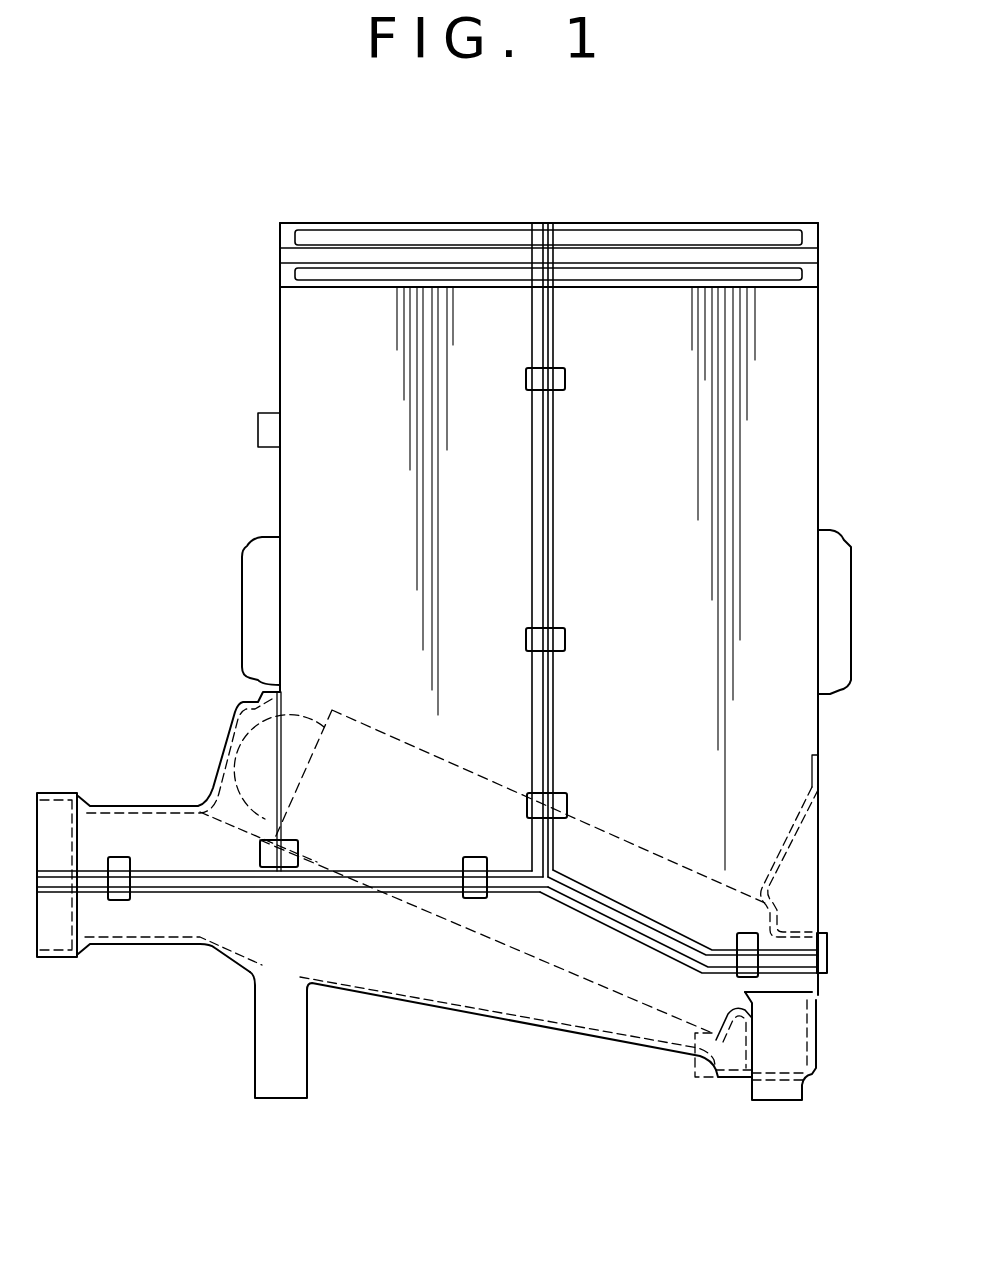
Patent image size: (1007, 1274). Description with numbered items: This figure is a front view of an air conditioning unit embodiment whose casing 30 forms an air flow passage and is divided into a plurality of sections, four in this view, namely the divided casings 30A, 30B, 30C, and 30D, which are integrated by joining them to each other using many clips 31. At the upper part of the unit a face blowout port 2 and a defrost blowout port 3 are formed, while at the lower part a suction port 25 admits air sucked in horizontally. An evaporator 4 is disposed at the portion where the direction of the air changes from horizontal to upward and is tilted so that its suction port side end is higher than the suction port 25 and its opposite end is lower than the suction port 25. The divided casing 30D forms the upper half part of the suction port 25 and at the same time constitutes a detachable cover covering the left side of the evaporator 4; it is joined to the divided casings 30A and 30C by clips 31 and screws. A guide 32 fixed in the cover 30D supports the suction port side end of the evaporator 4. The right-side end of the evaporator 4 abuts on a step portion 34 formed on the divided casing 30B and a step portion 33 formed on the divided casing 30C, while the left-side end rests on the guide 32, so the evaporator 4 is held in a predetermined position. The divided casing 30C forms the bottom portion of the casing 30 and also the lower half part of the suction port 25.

The face blowout port 2 is at (455, 272).
The defrost blowout port 3 is at (375, 238).
The evaporator 4 is at (670, 862).
The suction port 25 is at (58, 958).
The casing 30 is at (266, 370).
The divided casing 30A is at (280, 487).
The divided casing 30B is at (818, 362).
The divided casing 30C is at (510, 1026).
The divided casing 30D is at (118, 806).
The clip 31 is at (567, 380).
The guide 32 is at (255, 838).
The step portion 33 is at (765, 903).
The step portion 34 is at (760, 893).